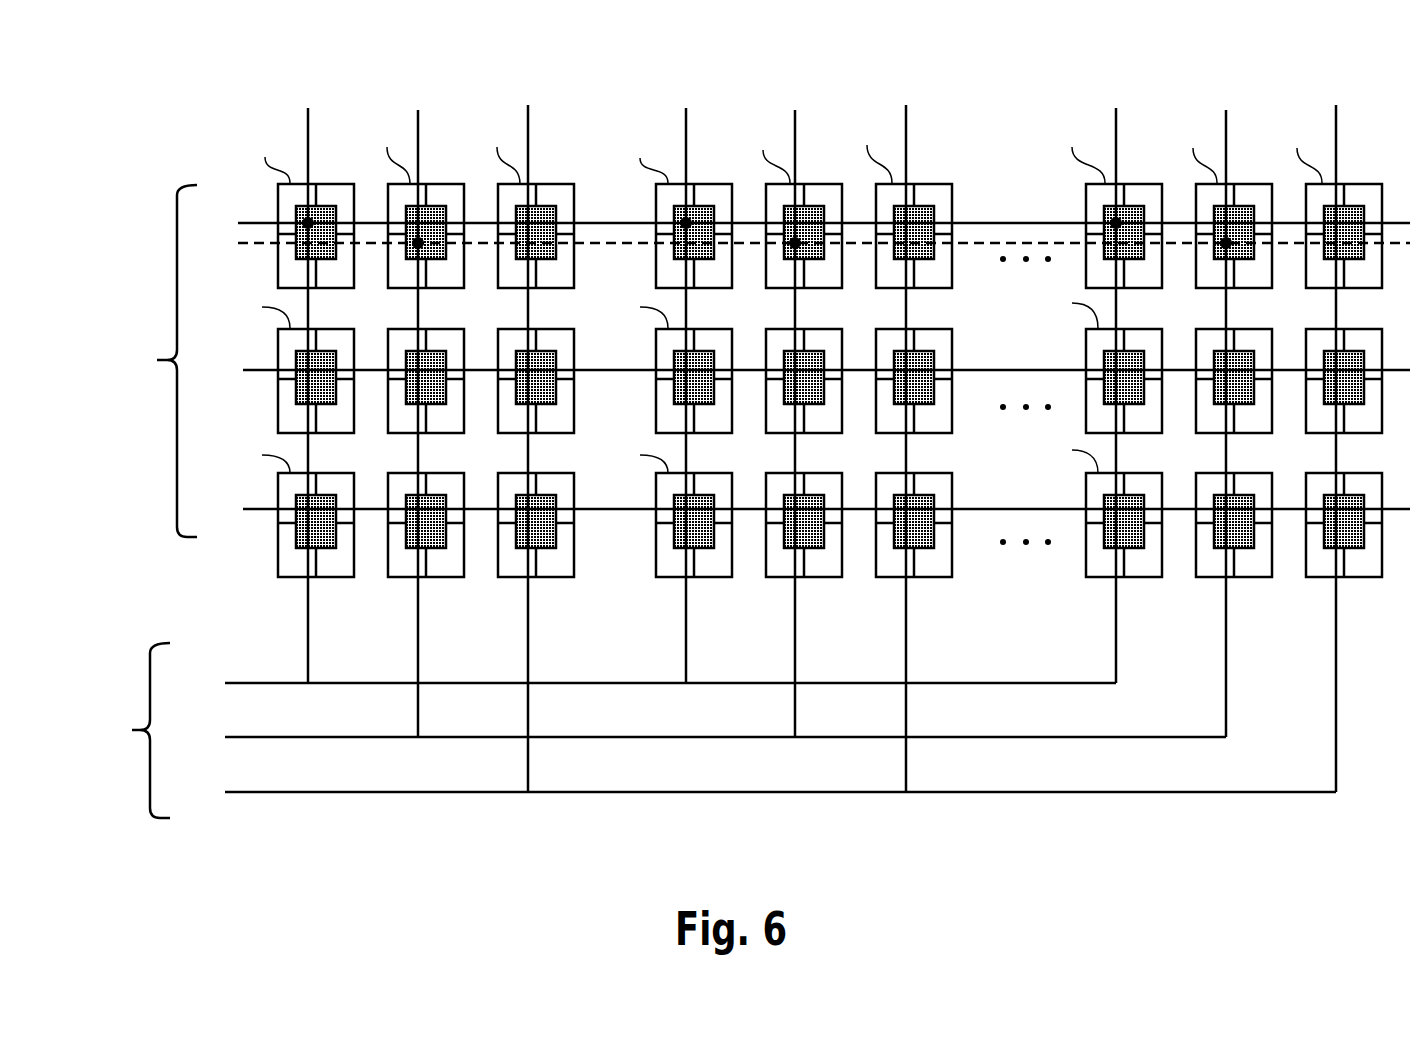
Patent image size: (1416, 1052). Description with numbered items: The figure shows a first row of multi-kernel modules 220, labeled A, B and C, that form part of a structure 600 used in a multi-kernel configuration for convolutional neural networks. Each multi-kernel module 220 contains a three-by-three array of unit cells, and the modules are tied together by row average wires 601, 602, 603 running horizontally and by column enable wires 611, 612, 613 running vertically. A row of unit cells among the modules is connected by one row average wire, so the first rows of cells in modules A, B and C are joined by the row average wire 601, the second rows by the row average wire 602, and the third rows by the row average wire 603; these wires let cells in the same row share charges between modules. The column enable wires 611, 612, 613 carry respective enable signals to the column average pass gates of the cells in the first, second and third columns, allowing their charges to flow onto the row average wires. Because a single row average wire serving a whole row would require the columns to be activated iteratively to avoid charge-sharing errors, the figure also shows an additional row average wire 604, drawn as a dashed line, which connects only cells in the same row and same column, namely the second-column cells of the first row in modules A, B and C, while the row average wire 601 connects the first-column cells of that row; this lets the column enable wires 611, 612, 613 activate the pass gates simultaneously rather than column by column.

The structure 600 is at (726, 460).
The multi-kernel module 220 is at (800, 414).
The row average wire 601 is at (257, 222).
The row average wire 602 is at (803, 374).
The row average wire 603 is at (803, 510).
The row average wire 604 is at (257, 244).
The column enable wire 611 is at (644, 684).
The column enable wire 612 is at (699, 737).
The column enable wire 613 is at (754, 790).